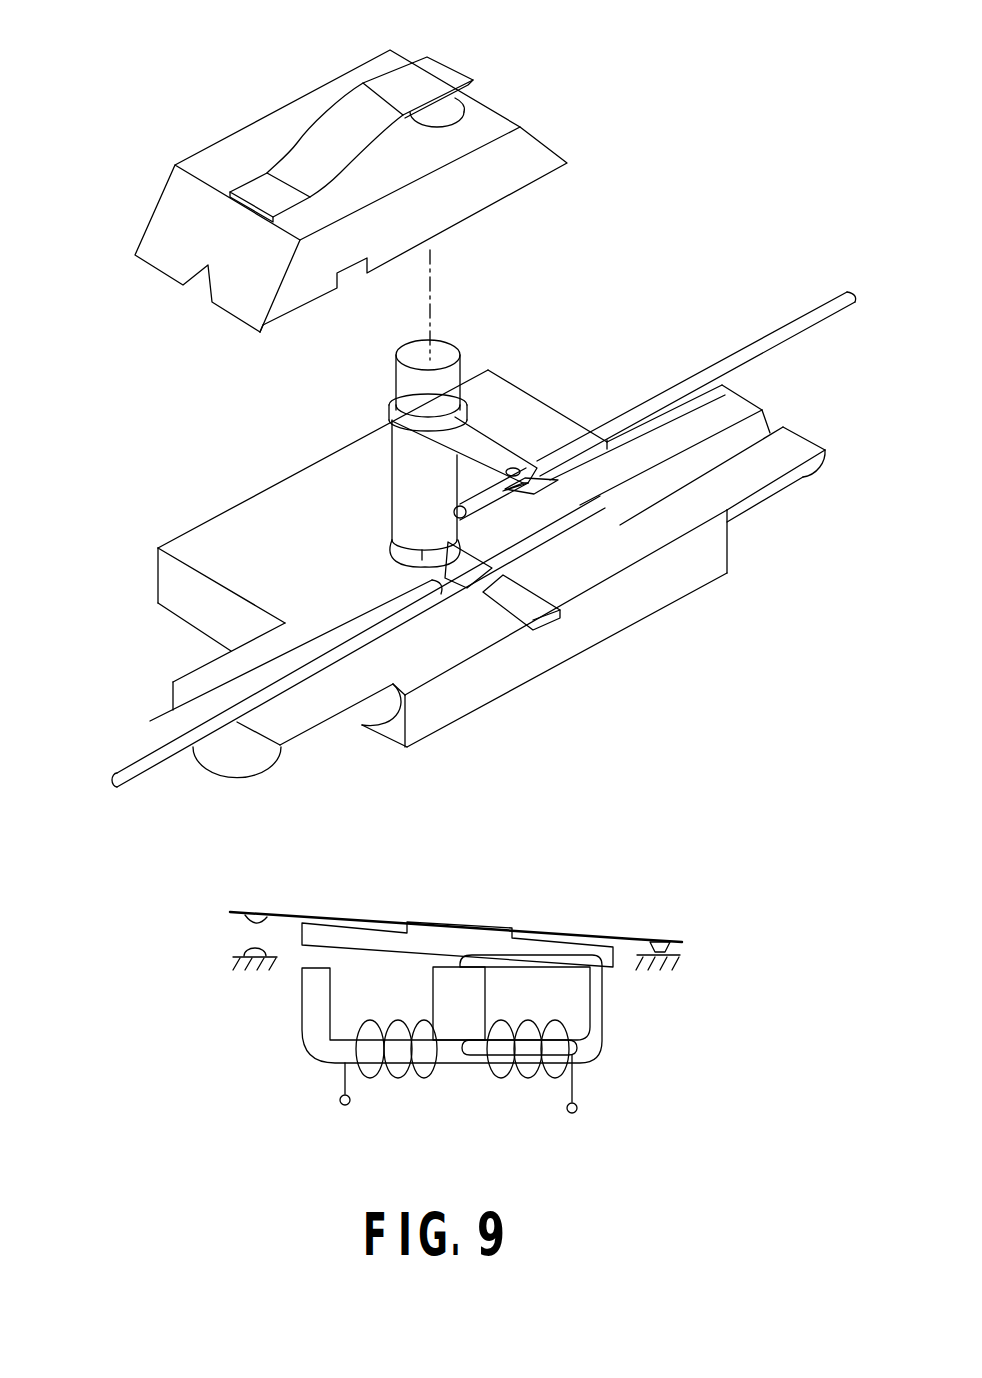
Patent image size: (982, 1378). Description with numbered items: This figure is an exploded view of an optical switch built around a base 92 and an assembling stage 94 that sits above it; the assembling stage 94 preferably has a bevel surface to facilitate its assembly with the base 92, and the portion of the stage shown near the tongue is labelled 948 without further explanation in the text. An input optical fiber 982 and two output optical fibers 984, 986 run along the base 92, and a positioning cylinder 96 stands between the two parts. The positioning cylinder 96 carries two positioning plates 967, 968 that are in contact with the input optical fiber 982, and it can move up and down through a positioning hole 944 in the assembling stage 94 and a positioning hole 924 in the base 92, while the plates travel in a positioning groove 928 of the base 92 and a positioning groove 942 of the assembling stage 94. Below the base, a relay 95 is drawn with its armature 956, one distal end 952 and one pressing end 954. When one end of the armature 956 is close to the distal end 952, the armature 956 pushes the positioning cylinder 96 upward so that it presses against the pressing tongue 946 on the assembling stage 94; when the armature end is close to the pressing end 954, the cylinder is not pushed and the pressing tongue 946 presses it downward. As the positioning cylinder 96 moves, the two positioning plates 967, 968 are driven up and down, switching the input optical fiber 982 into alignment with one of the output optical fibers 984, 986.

The base 92 is at (467, 578).
The assembling stage 94 is at (349, 195).
The relay 95 is at (453, 985).
The positioning cylinder 96 is at (429, 444).
The positioning hole 924 is at (397, 540).
The positioning groove 928 is at (563, 627).
The positioning groove 942 is at (350, 280).
The positioning hole 944 is at (455, 97).
The pressing tongue 946 is at (433, 68).
The cover side portion 948 is at (175, 222).
The distal end 952 is at (670, 948).
The pressing end 954 is at (248, 951).
The armature 956 is at (363, 920).
The positioning plate 967 is at (470, 435).
The positioning plate 968 is at (500, 438).
The input optical fiber 982 is at (798, 320).
The output optical fiber 984 is at (118, 770).
The output optical fiber 986 is at (153, 733).